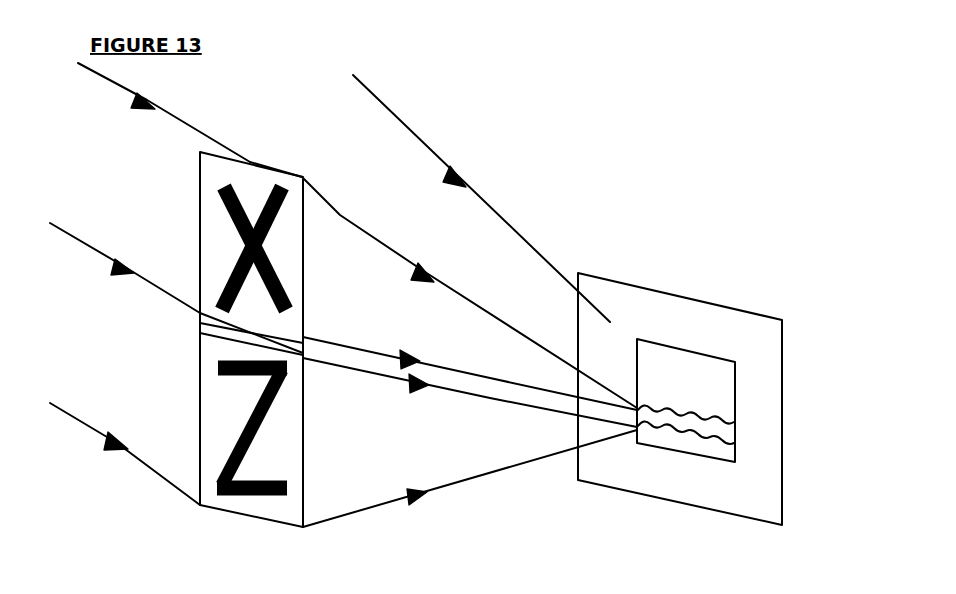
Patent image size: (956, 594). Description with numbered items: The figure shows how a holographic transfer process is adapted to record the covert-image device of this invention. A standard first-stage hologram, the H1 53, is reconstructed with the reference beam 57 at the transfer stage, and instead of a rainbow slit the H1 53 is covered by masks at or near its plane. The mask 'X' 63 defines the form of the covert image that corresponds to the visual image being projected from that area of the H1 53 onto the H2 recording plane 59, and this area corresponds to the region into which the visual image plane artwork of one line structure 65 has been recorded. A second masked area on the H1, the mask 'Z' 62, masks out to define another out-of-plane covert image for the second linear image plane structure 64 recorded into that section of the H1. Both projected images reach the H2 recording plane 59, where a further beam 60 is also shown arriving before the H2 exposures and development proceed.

The H1 53 is at (251, 348).
The reference beam 57 is at (176, 284).
The H2 recording plane 59 is at (737, 520).
The reference beam 60 is at (481, 198).
The second pattern (Z) 62 is at (227, 455).
The mask 'X' 63 is at (278, 190).
The second linear image plane structure 64 is at (737, 447).
The one line structure 65 is at (718, 418).